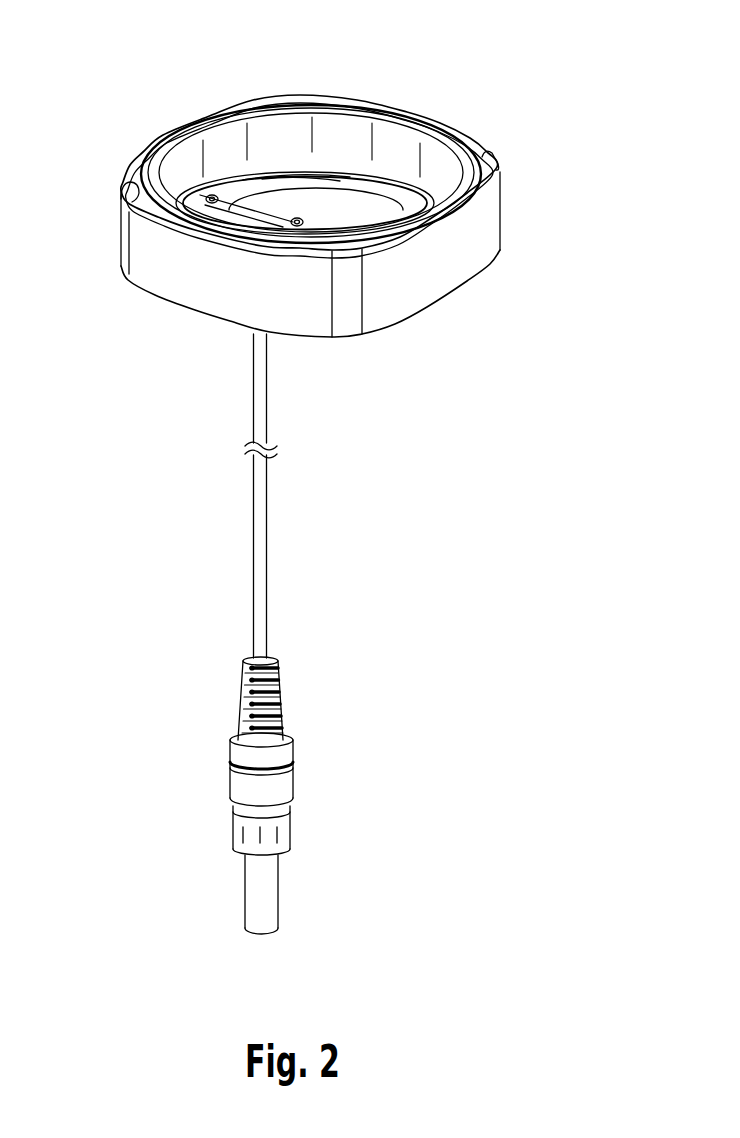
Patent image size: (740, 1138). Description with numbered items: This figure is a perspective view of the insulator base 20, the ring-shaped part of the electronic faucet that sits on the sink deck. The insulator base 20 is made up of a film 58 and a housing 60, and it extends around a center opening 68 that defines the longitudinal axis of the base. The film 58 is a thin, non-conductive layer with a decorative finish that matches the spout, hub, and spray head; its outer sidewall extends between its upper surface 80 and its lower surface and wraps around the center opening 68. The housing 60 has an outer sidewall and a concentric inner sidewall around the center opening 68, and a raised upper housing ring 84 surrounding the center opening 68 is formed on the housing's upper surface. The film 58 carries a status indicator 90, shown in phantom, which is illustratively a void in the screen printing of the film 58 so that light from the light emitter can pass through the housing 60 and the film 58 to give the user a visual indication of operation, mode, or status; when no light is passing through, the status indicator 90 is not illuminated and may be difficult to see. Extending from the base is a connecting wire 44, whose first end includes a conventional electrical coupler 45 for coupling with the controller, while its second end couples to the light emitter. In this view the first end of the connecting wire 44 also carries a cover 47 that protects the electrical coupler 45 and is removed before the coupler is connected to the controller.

The insulator base 20 is at (535, 106).
The film 58 is at (460, 257).
The upper surface 80 is at (142, 175).
The raised upper housing ring 84 is at (177, 133).
The housing 60 is at (397, 137).
The center opening 68 is at (278, 125).
The status indicator 90 is at (166, 287).
The connecting wire 44 is at (267, 558).
The electrical coupler 45 is at (232, 825).
The cover 47 is at (280, 883).